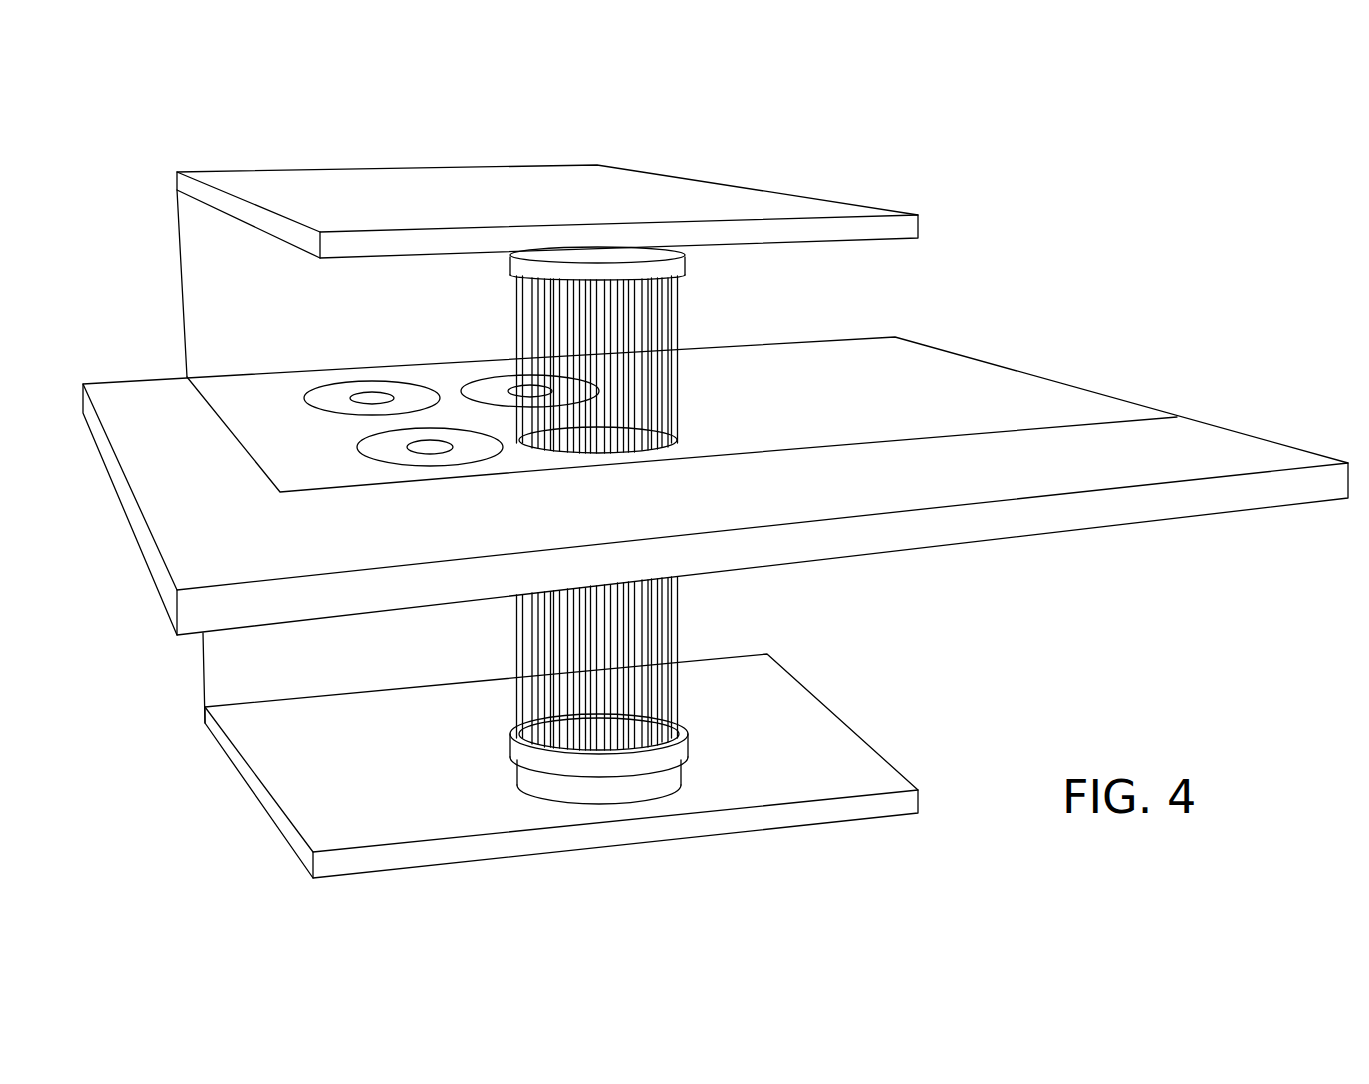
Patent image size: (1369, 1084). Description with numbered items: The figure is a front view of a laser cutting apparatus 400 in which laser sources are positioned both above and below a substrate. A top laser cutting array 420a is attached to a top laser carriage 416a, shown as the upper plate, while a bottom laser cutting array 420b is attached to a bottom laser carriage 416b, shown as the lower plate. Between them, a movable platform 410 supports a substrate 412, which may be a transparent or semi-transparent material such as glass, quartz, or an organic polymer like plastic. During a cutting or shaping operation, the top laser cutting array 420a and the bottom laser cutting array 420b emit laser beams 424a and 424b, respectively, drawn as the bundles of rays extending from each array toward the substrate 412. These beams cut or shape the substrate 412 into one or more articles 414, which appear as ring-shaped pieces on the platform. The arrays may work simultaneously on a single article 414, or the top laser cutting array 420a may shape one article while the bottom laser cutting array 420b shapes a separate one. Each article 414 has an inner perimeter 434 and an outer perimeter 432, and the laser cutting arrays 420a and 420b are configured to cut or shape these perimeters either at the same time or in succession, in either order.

The apparatus 400 is at (148, 235).
The movable platform 410 is at (840, 540).
The substrate 412 is at (943, 370).
The article 414 is at (380, 448).
The top laser carriage 416a is at (278, 187).
The bottom laser carriage 416b is at (827, 752).
The top laser cutting array 420a is at (685, 268).
The bottom laser cutting array 420b is at (670, 783).
The laser beams 424a is at (655, 337).
The laser beams 424b is at (670, 622).
The outer perimeter 432 is at (497, 442).
The inner perimeter 434 is at (437, 452).